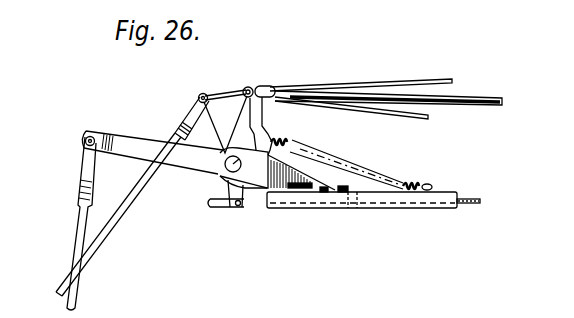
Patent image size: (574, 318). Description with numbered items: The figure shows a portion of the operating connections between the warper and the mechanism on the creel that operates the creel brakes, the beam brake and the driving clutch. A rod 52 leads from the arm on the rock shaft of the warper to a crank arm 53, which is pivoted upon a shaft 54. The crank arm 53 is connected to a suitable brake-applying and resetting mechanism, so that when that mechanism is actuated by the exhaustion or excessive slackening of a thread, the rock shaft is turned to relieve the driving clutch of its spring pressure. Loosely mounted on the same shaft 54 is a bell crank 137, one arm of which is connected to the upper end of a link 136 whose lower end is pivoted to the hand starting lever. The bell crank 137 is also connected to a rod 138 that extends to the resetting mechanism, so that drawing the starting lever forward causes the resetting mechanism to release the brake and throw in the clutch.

The rod 52 is at (78, 243).
The crank arm 53 is at (132, 147).
The shaft 54 is at (227, 176).
The link 136 is at (105, 240).
The bell crank 137 is at (212, 120).
The rod 138 is at (445, 80).